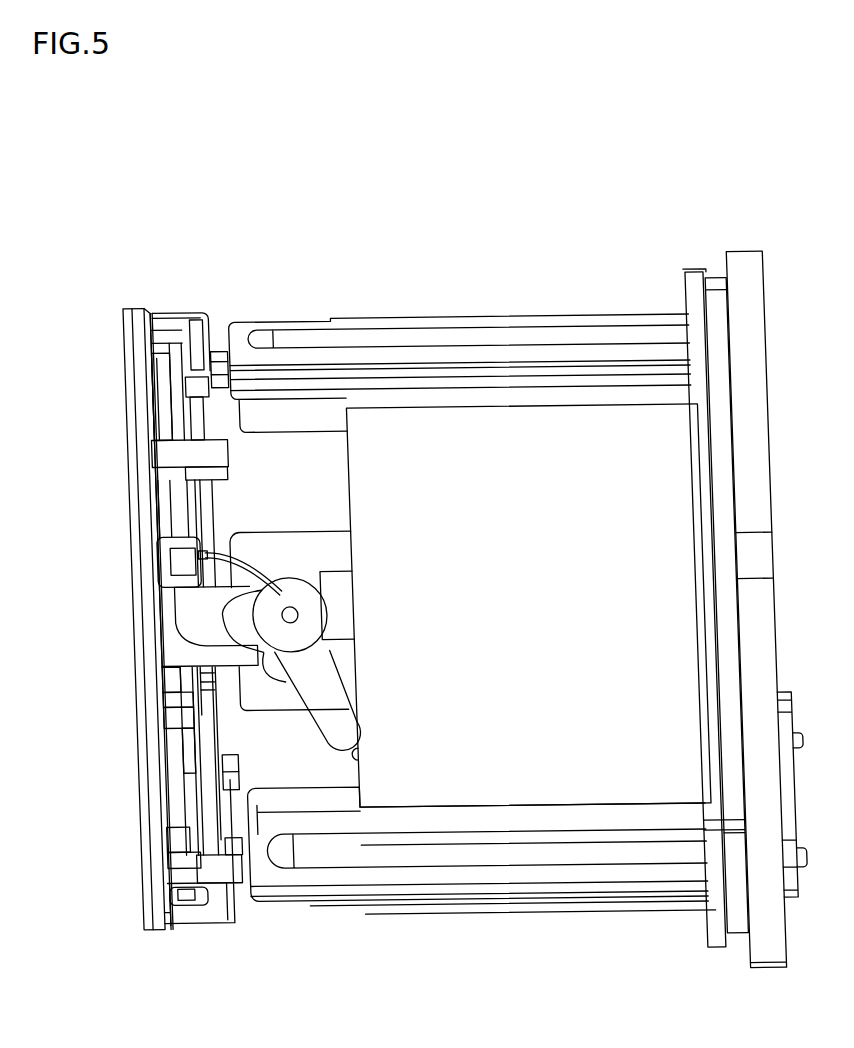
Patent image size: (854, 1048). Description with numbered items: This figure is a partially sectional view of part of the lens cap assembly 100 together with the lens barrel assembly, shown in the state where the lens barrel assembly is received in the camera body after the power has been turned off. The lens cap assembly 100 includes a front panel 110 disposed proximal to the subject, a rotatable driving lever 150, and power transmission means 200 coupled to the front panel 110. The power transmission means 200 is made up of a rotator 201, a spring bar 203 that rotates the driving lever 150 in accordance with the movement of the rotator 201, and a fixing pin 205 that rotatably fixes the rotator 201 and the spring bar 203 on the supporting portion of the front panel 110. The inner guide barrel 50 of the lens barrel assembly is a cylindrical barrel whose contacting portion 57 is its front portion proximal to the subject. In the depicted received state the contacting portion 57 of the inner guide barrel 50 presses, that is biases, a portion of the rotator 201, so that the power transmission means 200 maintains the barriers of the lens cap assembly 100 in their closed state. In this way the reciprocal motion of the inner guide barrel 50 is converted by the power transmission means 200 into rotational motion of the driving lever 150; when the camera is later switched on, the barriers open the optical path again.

The inner guide barrel 50 is at (610, 808).
The contacting portion 57 is at (358, 766).
The lens cap assembly 100 is at (220, 955).
The front panel 110 is at (150, 864).
The driving lever 150 is at (318, 453).
The power transmission means 200 is at (338, 646).
The rotator 201 is at (375, 685).
The spring bar 203 is at (340, 512).
The fixing pin 205 is at (294, 612).